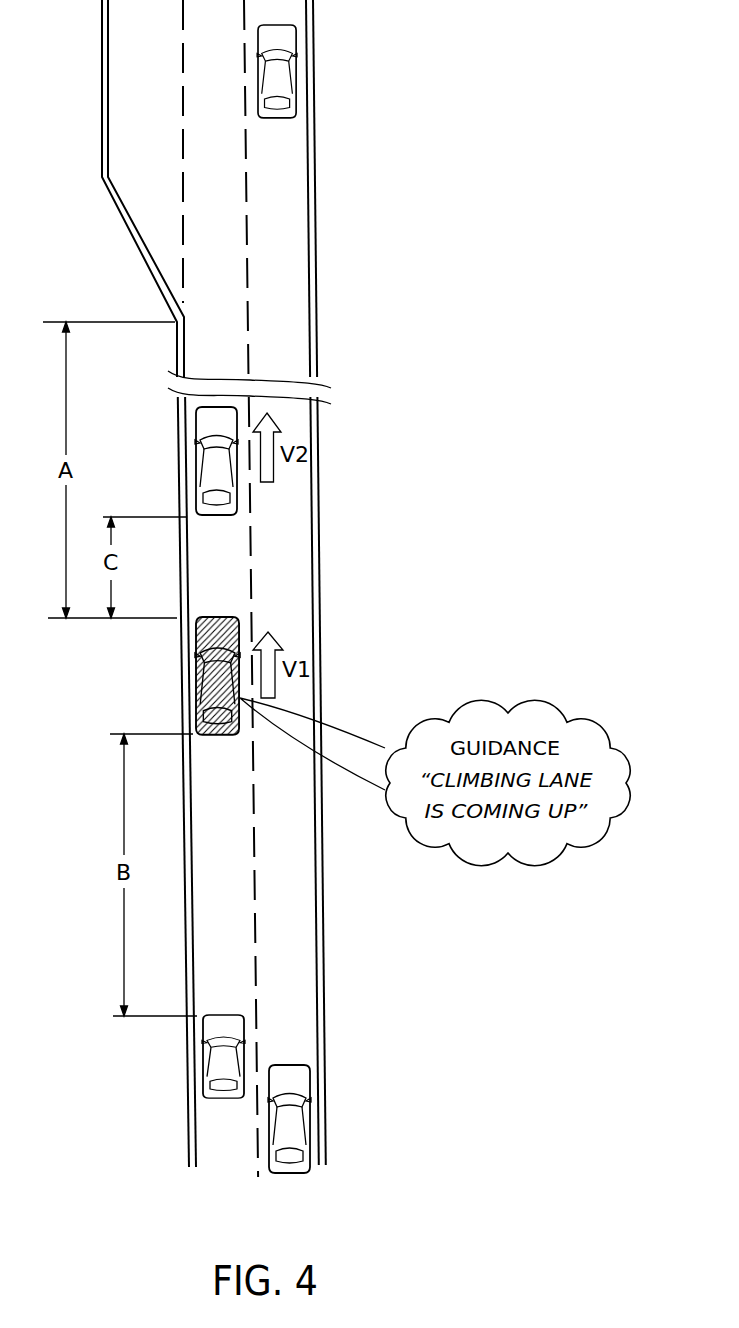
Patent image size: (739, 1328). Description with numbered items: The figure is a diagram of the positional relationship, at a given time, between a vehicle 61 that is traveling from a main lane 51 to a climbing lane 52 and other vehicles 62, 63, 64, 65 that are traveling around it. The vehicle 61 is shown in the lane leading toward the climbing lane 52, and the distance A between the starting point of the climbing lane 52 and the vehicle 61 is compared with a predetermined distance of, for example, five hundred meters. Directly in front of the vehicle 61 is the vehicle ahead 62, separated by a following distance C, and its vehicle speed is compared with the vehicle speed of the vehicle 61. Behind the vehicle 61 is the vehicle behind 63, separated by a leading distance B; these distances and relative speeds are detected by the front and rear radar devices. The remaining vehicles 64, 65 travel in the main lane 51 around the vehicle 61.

The main lane 51 is at (296, 505).
The climbing lane 52 is at (122, 89).
The vehicle 61 is at (203, 690).
The vehicle ahead 62 is at (202, 470).
The vehicle behind 63 is at (207, 1062).
The other vehicle 64 is at (281, 78).
The other vehicle 65 is at (296, 1125).